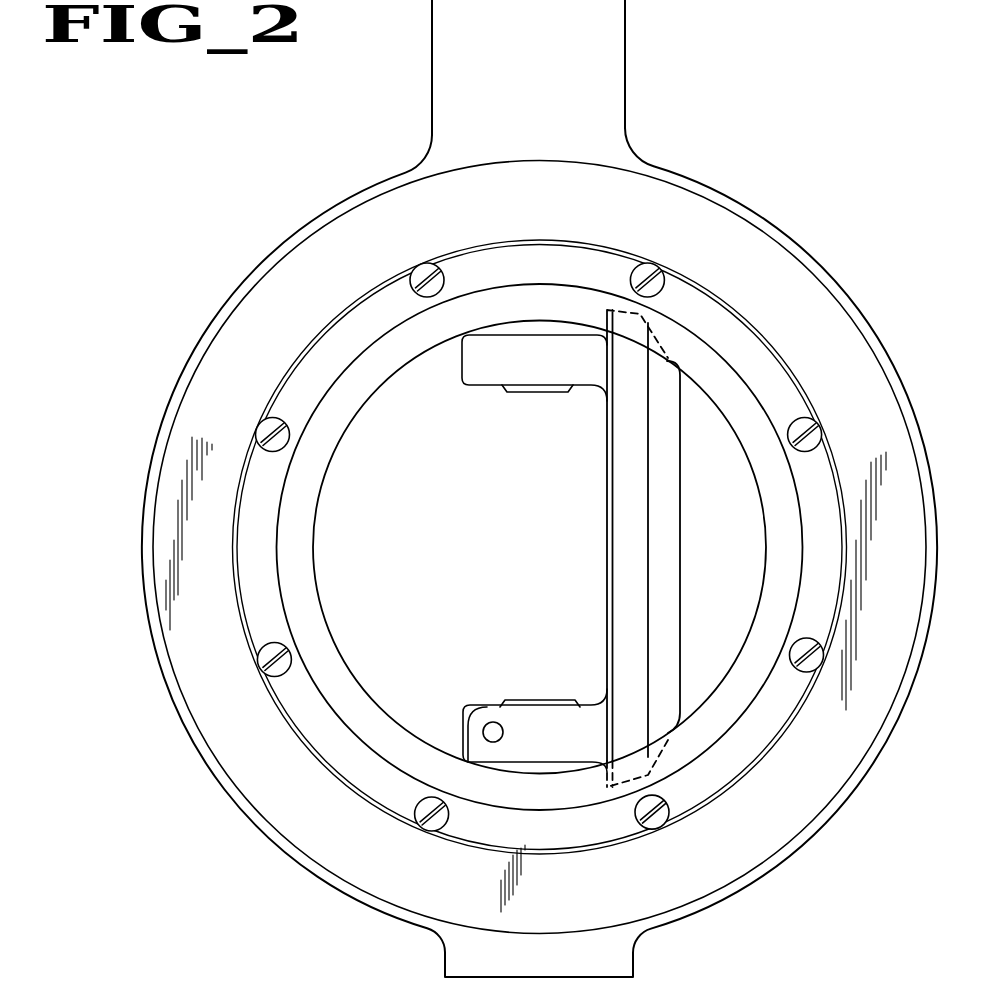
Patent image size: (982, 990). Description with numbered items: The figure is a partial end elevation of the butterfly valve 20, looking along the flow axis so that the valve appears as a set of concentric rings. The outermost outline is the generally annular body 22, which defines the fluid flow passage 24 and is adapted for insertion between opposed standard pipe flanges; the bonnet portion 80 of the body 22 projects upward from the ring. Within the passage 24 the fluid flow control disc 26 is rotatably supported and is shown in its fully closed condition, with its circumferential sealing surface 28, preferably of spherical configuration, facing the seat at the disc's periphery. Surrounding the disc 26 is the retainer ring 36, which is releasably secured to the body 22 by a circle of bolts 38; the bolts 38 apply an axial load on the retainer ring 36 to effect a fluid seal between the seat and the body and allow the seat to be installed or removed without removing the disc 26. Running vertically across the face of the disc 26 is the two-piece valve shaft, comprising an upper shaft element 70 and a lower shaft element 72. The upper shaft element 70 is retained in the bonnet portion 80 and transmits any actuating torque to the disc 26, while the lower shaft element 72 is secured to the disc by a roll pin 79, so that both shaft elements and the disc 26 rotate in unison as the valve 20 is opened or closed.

The butterfly valve 20 is at (727, 117).
The body 22 is at (291, 241).
The fluid flow passage 24 is at (328, 628).
The fluid flow control disc 26 is at (606, 548).
The circumferential sealing surface 28 is at (641, 547).
The retainer ring 36 is at (300, 580).
The bolts 38 is at (425, 263).
The upper shaft element 70 is at (523, 393).
The lower shaft element 72 is at (537, 696).
The roll pin 79 is at (492, 731).
The bonnet portion 80 is at (442, 62).